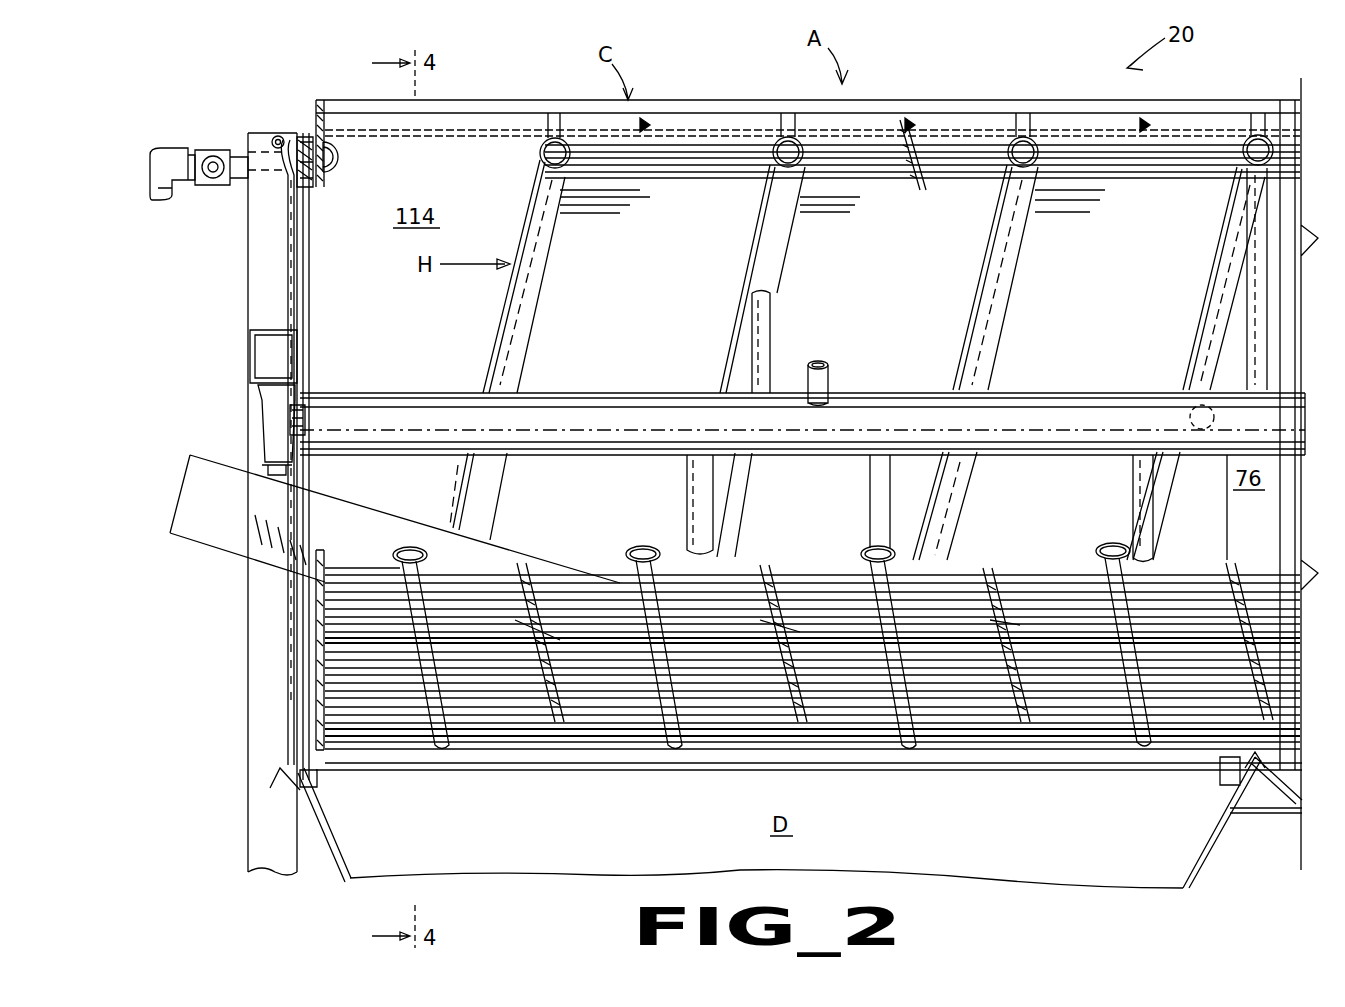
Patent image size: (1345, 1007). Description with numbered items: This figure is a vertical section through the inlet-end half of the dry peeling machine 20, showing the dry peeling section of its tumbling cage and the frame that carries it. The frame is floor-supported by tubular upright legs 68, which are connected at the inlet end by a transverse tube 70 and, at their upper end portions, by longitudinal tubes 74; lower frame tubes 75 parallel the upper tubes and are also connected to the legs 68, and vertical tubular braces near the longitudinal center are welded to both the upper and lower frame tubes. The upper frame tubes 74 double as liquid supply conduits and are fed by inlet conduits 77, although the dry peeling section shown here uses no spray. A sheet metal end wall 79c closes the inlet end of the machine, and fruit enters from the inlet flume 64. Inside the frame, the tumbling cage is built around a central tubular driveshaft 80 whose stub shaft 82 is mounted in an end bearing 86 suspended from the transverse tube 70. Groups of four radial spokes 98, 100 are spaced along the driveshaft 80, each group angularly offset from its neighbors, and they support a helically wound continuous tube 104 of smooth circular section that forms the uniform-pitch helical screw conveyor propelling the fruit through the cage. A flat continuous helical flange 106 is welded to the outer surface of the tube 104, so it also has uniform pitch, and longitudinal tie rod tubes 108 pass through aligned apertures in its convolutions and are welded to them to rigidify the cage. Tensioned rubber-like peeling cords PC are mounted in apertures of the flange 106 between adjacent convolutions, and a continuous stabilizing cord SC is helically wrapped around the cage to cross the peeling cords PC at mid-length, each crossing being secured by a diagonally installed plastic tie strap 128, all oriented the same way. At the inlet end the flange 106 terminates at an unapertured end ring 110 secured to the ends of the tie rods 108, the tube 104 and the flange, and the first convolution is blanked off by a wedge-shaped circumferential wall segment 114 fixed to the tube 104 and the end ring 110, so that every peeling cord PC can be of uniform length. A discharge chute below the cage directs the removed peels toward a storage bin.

The dry peeling machine 20 is at (1299, 474).
The inlet flume 64 is at (185, 492).
The tubular upright legs 68 is at (255, 832).
The transverse tube 70 is at (250, 355).
The longitudinal tubes 74 is at (302, 138).
The frame tubes 75 is at (1285, 812).
The inlet conduits 77 is at (158, 188).
The sheet metal end wall 79c is at (290, 233).
The central tubular driveshaft 80 is at (1008, 392).
The stub shaft 82 is at (303, 428).
The end bearing 86 is at (267, 406).
The radial spokes 98 is at (830, 453).
The radial spokes 100 is at (1193, 410).
The helically wound continuous tube 104 is at (508, 297).
The helical flange 106 is at (555, 100).
The longitudinal tie rod tubes 108 is at (710, 104).
The end ring 110 is at (320, 612).
The circumferential wall segment 114 is at (352, 572).
The plastic tie strap 128 is at (1000, 595).
The stabilizing cord SC is at (986, 572).
The peeling cords PC is at (1272, 585).